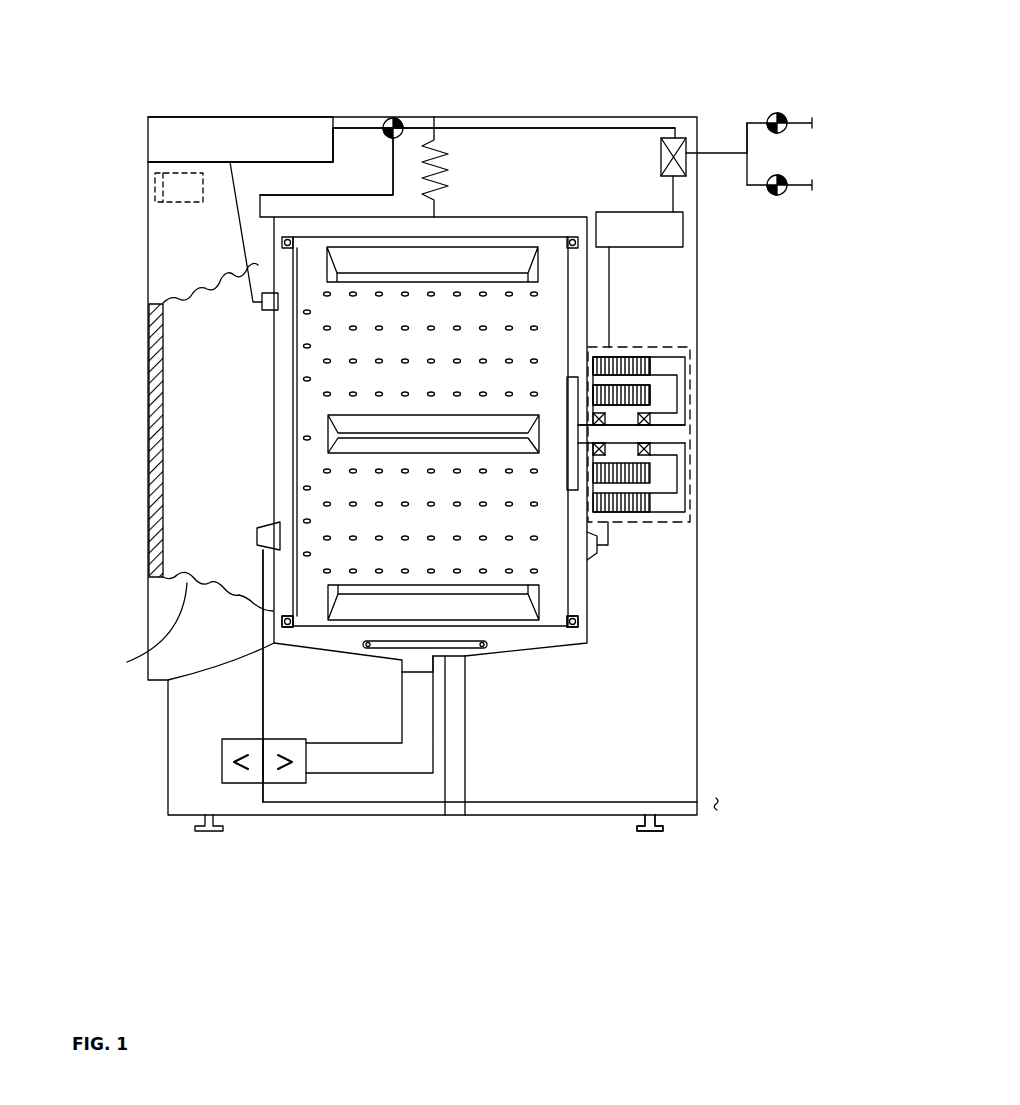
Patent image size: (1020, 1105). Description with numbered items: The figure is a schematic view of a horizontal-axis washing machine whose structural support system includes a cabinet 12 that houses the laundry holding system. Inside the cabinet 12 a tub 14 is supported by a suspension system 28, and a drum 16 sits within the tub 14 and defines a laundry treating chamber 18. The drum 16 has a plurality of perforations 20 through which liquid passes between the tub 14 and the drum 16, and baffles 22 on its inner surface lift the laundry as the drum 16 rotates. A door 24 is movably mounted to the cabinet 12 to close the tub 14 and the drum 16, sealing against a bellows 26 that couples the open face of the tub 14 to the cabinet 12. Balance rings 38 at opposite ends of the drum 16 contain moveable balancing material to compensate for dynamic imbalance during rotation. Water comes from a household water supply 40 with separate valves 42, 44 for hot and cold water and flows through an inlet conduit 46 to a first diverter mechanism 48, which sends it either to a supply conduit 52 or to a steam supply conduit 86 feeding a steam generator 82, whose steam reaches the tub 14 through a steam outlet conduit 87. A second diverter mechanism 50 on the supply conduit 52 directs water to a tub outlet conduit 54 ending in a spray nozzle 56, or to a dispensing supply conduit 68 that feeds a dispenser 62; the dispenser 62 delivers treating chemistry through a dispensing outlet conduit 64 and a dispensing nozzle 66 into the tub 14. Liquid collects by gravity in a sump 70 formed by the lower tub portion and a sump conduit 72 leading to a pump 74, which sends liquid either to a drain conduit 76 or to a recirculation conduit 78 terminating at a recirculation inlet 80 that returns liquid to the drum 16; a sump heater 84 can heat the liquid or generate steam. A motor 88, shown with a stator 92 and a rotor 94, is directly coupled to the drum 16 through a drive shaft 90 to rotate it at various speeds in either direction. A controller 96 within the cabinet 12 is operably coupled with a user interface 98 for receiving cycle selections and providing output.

The cabinet 12 is at (621, 112).
The tub 14 is at (468, 216).
The drum 16 is at (360, 236).
The laundry treating chamber 18 is at (435, 354).
The perforations 20 is at (537, 328).
The baffles 22 is at (518, 607).
The door 24 is at (146, 423).
The bellows 26 is at (185, 631).
The suspension system 28 is at (422, 160).
The balance ring 38 is at (287, 630).
The household water supply 40 is at (802, 110).
The hot water valve 42 is at (781, 110).
The cold water valve 44 is at (782, 196).
The inlet conduit 46 is at (715, 152).
The first diverter mechanism 48 is at (672, 137).
The second diverter mechanism 50 is at (382, 117).
The supply conduit 52 is at (553, 127).
The tub outlet conduit 54 is at (320, 190).
The spray nozzle 56 is at (271, 284).
The dispenser 62 is at (277, 140).
The dispensing outlet conduit 64 is at (237, 213).
The dispensing nozzle 66 is at (262, 307).
The dispensing supply conduit 68 is at (365, 128).
The sump 70 is at (474, 668).
The sump conduit 72 is at (410, 755).
The pump 74 is at (245, 789).
The drain conduit 76 is at (707, 808).
The recirculation conduit 78 is at (263, 682).
The recirculation inlet 80 is at (270, 537).
The steam generator 82 is at (684, 233).
The sump heater 84 is at (487, 649).
The steam supply conduit 86 is at (676, 181).
The steam outlet conduit 87 is at (608, 543).
The motor 88 is at (692, 346).
The drive shaft 90 is at (660, 436).
The stator 92 is at (645, 357).
The rotor 94 is at (643, 395).
The controller 96 is at (184, 204).
The user interface 98 is at (140, 188).